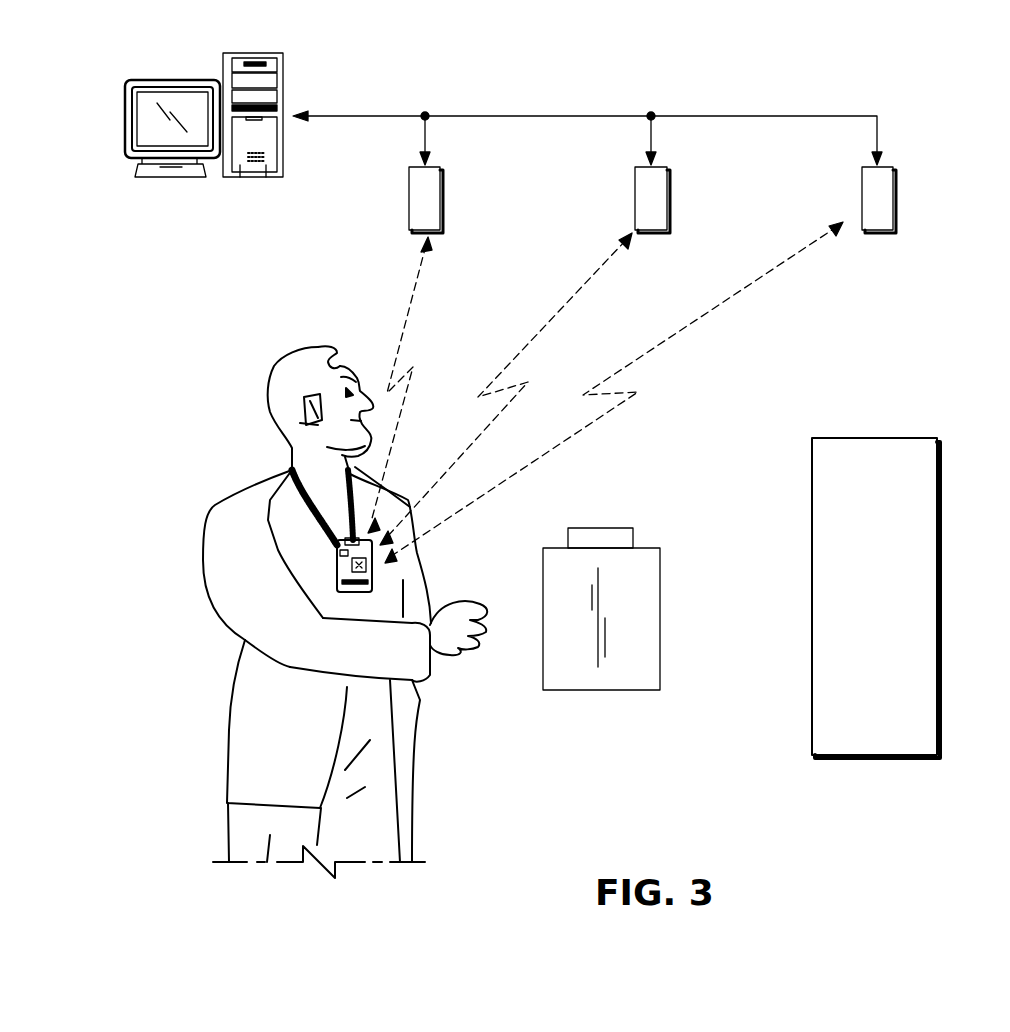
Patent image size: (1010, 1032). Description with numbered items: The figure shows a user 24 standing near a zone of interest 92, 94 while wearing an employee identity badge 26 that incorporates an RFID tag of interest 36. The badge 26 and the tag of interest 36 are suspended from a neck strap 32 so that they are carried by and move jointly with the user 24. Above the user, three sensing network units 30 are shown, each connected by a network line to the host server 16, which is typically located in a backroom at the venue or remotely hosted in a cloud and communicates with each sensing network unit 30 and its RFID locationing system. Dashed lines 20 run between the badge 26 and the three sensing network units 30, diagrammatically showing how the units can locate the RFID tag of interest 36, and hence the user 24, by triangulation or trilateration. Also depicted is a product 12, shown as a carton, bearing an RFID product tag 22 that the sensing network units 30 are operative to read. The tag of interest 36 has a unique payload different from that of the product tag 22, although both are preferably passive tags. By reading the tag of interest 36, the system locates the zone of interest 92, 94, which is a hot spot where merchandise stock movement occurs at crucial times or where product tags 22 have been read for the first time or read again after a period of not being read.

The network host computer or server 16 is at (125, 118).
The sensing network unit 30 is at (409, 198).
The dashed lines 20 is at (405, 312).
The user 24 is at (260, 612).
The neck strap 32 is at (310, 478).
The employee identity badge 26 is at (202, 523).
The RFID tag of interest 36 is at (337, 570).
The product 12 is at (632, 605).
The RFID product tag 22 is at (618, 540).
The zone of interest 92 is at (829, 598).
The zone of interest 94 is at (812, 595).